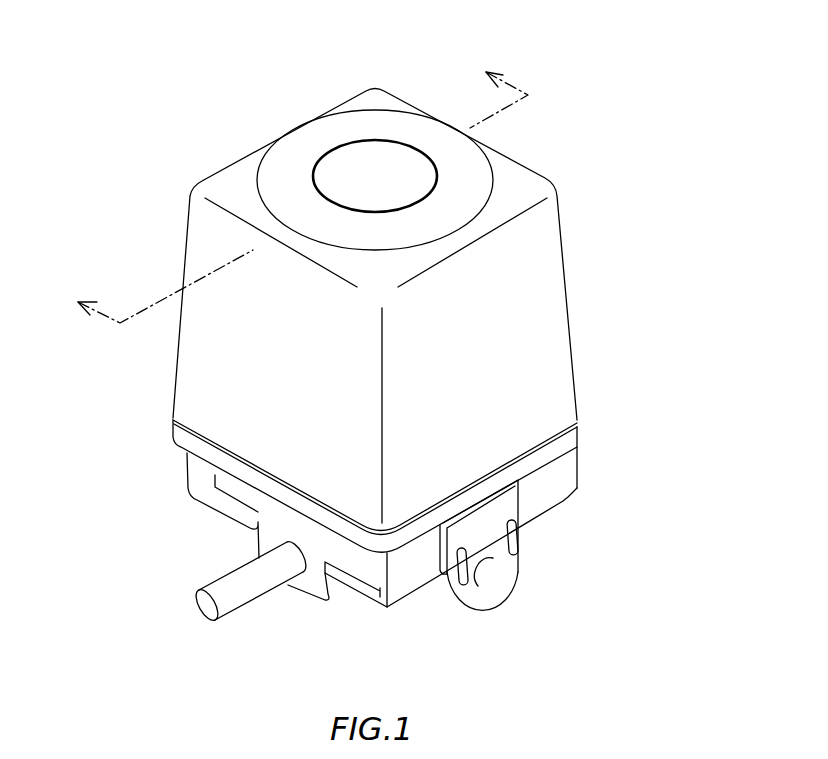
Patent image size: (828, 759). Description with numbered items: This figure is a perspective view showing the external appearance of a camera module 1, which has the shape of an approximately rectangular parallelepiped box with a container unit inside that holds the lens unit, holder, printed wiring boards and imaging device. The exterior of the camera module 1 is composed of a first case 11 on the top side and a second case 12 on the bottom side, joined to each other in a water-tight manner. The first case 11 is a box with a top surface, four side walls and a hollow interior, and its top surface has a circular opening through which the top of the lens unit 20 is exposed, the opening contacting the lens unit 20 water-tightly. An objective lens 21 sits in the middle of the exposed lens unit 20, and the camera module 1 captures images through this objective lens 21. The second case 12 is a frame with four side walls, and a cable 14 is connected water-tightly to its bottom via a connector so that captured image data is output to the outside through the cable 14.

The camera module 1 is at (634, 93).
The first case 11 is at (538, 320).
The second case 12 is at (562, 445).
The cable 14 is at (248, 573).
The lens unit 20 is at (362, 167).
The objective lens 21 is at (375, 176).